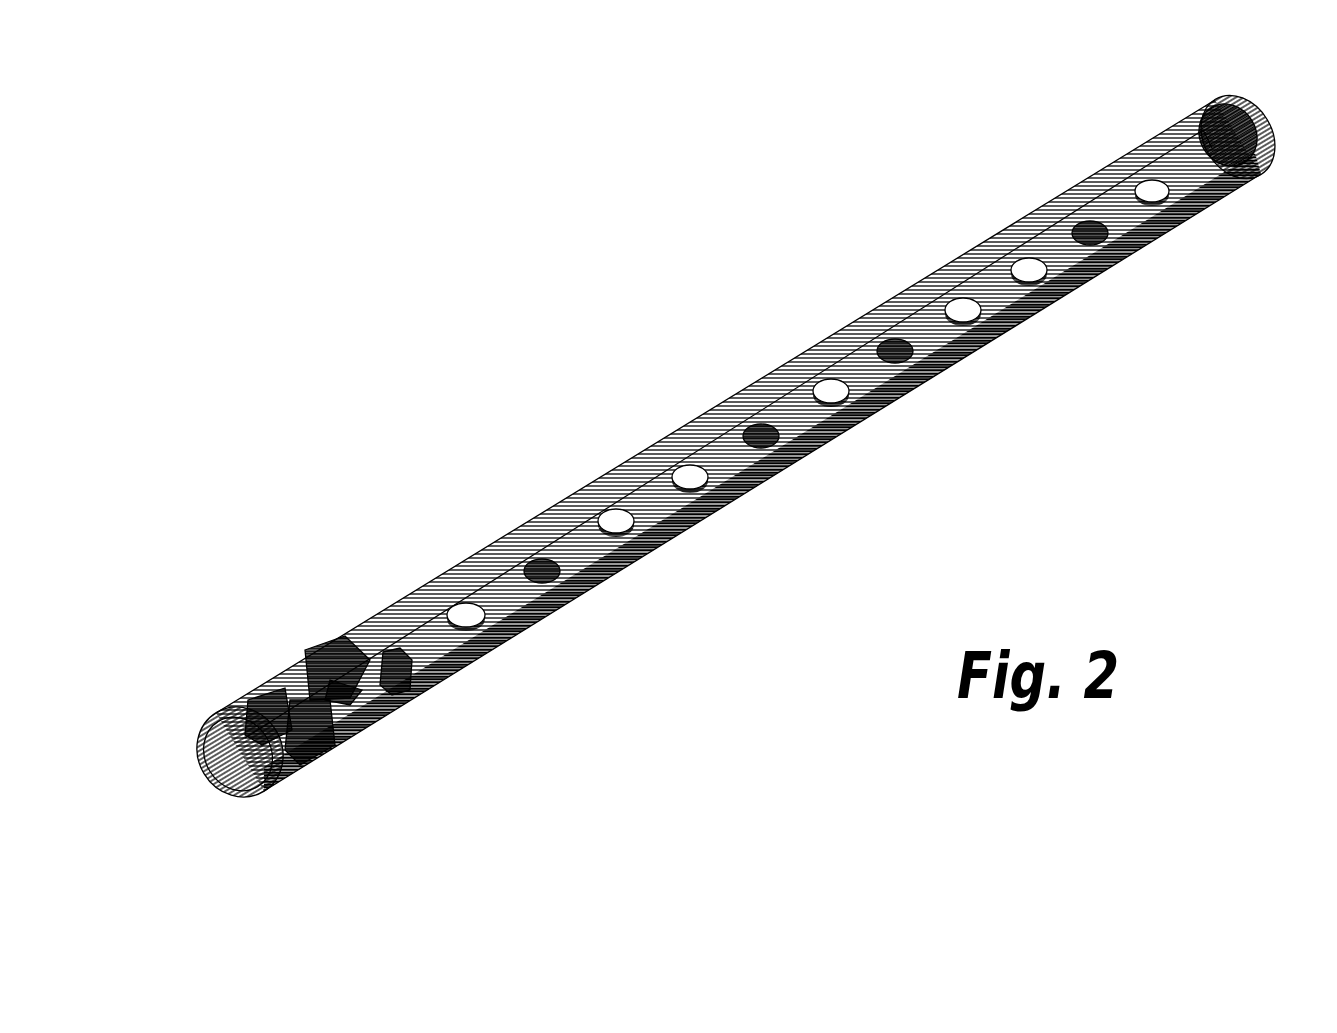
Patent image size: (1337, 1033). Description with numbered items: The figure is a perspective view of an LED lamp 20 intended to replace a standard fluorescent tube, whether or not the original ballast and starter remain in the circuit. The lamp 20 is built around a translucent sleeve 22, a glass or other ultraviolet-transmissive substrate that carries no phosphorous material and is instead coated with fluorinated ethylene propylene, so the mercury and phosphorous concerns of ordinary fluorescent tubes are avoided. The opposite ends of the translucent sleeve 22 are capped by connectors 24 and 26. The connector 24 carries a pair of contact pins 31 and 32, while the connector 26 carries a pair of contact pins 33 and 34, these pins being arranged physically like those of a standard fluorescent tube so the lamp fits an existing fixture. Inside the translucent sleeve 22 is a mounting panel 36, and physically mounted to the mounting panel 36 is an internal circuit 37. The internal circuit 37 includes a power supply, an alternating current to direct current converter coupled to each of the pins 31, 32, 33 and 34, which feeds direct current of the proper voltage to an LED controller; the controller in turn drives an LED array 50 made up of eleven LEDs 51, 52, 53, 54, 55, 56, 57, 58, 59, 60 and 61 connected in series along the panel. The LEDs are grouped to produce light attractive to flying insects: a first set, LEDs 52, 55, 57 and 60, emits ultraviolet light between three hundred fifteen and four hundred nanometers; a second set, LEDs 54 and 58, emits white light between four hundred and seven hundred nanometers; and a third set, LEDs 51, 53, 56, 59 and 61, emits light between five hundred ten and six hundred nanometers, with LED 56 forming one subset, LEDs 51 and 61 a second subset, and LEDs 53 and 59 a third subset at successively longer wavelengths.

The LED lamp 20 is at (478, 495).
The translucent sleeve 22 is at (1021, 215).
The connector 24 is at (253, 810).
The connector 26 is at (1270, 130).
The contact pin 31 is at (207, 757).
The contact pin 32 is at (237, 767).
The contact pin 33 is at (1233, 130).
The contact pin 34 is at (1253, 142).
The mounting panel 36 is at (415, 645).
The internal circuit 37 is at (322, 652).
The LED array 50 is at (635, 472).
The LED 51 is at (470, 628).
The LED 52 is at (550, 577).
The LED 53 is at (633, 560).
The LED 54 is at (695, 485).
The LED 55 is at (768, 442).
The LED 56 is at (838, 400).
The LED 57 is at (900, 358).
The LED 58 is at (966, 320).
The LED 59 is at (1035, 280).
The LED 60 is at (1095, 242).
The LED 61 is at (1143, 190).